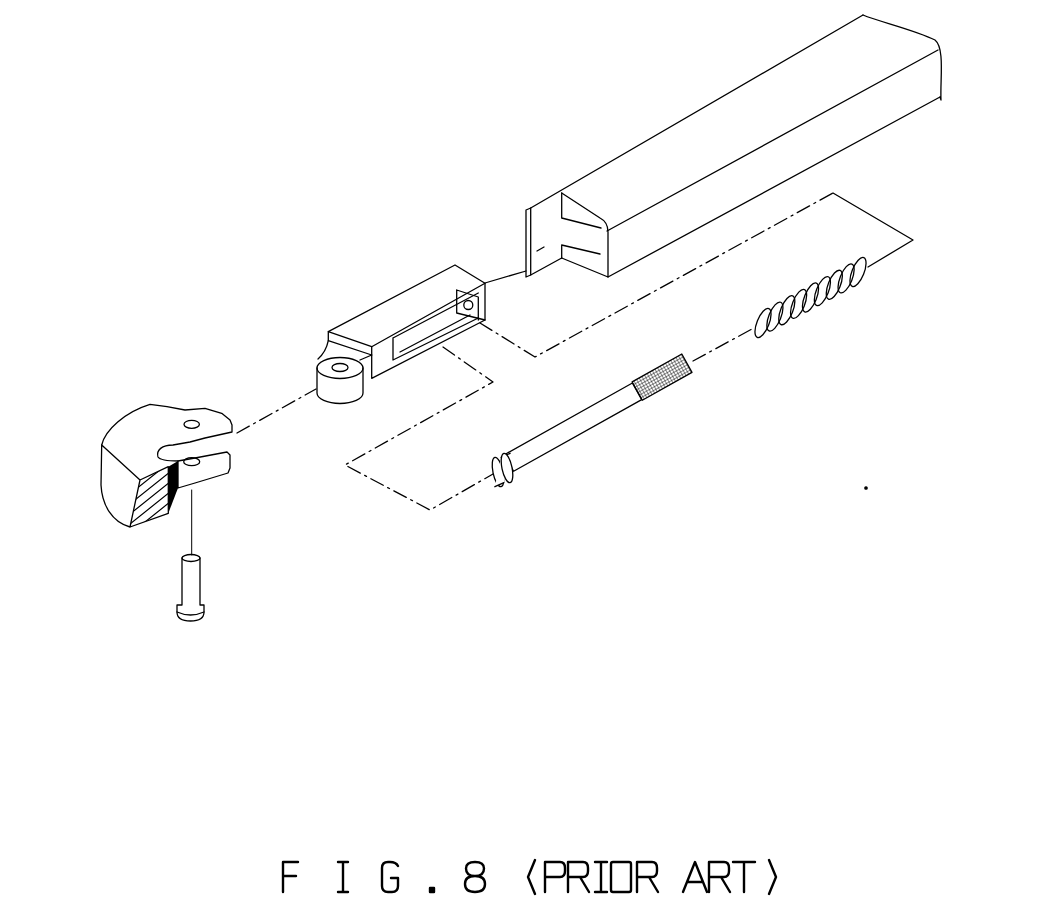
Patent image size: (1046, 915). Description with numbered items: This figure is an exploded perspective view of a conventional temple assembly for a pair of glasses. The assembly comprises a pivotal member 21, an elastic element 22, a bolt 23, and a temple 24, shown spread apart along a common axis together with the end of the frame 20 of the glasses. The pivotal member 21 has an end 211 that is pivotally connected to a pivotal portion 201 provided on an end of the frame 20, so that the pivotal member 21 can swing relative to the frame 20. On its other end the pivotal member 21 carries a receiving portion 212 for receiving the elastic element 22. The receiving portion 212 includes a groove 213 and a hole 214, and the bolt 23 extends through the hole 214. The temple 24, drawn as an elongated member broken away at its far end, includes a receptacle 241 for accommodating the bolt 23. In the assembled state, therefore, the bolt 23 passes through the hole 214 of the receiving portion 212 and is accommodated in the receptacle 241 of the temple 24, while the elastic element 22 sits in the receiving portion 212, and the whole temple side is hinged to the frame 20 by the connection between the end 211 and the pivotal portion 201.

The frame 20 is at (130, 450).
The pivotal portion 201 is at (193, 419).
The pivotal member 21 is at (365, 298).
The end 211 is at (340, 371).
The receiving portion 212 is at (432, 323).
The groove 213 is at (405, 349).
The hole 214 is at (473, 304).
The elastic element 22 is at (810, 313).
The bolt 23 is at (580, 437).
The temple 24 is at (697, 133).
The receptacle 241 is at (566, 220).